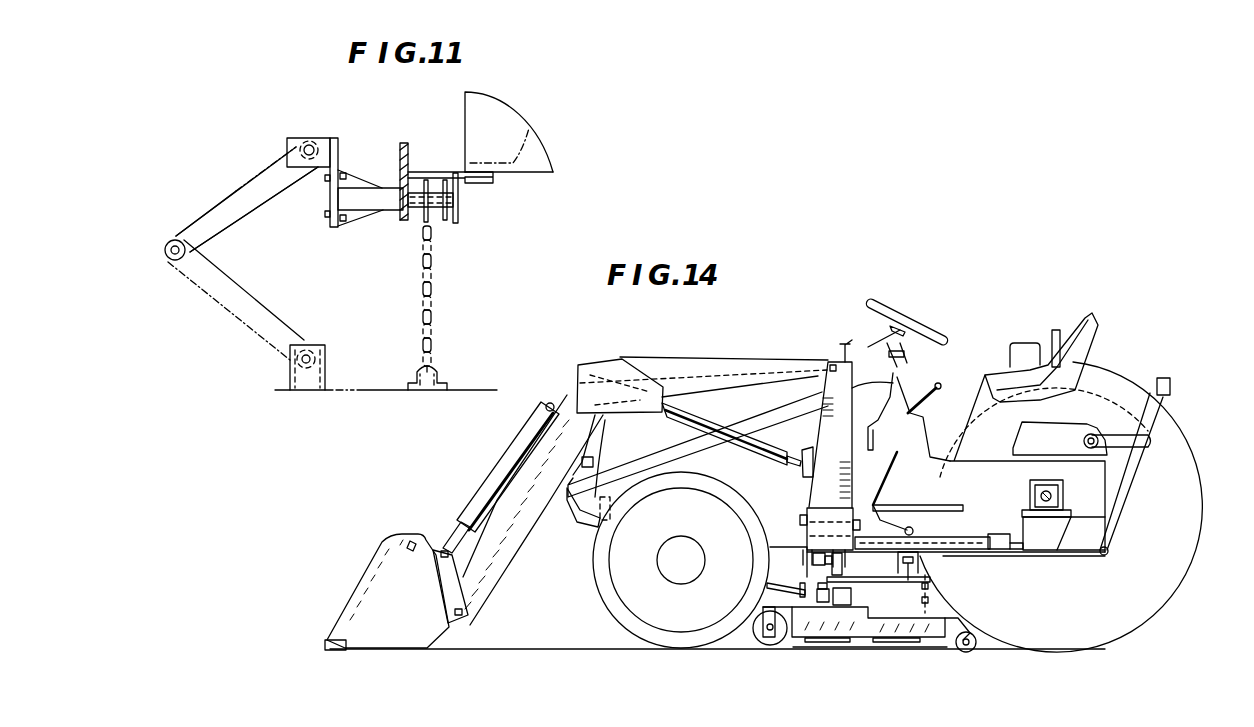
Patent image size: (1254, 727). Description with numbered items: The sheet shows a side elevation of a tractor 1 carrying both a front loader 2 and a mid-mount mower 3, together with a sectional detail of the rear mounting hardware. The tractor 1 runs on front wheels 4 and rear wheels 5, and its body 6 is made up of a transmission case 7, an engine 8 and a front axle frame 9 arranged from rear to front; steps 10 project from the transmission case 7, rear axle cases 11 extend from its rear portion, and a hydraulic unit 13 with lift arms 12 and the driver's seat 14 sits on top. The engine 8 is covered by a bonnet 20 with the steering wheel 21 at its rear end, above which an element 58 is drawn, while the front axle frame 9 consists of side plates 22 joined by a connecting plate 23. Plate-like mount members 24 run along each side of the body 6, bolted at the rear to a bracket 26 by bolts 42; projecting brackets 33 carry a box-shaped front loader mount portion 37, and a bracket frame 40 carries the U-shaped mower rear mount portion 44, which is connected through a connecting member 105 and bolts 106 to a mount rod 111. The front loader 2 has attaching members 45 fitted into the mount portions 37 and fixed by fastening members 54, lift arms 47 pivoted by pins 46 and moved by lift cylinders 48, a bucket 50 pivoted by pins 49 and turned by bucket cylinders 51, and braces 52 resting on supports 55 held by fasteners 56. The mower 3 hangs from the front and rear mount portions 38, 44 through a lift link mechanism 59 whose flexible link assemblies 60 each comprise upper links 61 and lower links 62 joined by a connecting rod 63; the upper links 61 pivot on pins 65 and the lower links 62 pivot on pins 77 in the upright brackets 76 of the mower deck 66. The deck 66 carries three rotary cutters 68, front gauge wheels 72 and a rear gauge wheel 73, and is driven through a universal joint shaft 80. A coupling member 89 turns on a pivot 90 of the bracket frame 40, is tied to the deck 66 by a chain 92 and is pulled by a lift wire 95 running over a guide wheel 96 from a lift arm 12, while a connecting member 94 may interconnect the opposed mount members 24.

In FIG. 14, the tractor 1 is at (966, 373).
In FIG. 14, the front loader 2 is at (555, 386).
In FIG. 14, the mower 3 is at (948, 648).
In FIG. 14, the front wheels 4 is at (604, 592).
In FIG. 14, the rear wheels 5 is at (1178, 587).
In FIG. 11, the tractor body 6 is at (480, 118).
In FIG. 14, the tractor body 6 is at (1083, 562).
In FIG. 11, the transmission case 7 is at (515, 106).
In FIG. 14, the transmission case 7 is at (1095, 516).
In FIG. 14, the engine 8 is at (782, 543).
In FIG. 14, the front axle frame 9 is at (632, 534).
In FIG. 14, the steps 10 is at (942, 530).
In FIG. 14, the rear axle cases 11 is at (1062, 482).
In FIG. 14, the lift arms 12 is at (1150, 408).
In FIG. 14, the hydraulic unit 13 is at (1110, 378).
In FIG. 14, the driver's seat 14 is at (1088, 338).
In FIG. 14, the bonnet 20 is at (793, 376).
In FIG. 14, the steering wheel 21 is at (924, 318).
In FIG. 14, the side plates 22 is at (597, 546).
In FIG. 14, the connecting plate 23 is at (586, 512).
In FIG. 11, the mount members 24 is at (402, 224).
In FIG. 14, the mount members 24 is at (975, 534).
In FIG. 14, the bracket 26 is at (1052, 548).
In FIG. 14, the projecting brackets 33 is at (800, 520).
In FIG. 14, the front loader mount portion 37 is at (840, 508).
In FIG. 14, the mower front mount portion 38 is at (840, 567).
In FIG. 11, the bracket frame 40 is at (458, 203).
In FIG. 14, the bolts 42 is at (999, 550).
In FIG. 11, the mower rear mount portion 44 is at (318, 138).
In FIG. 14, the mower rear mount portion 44 is at (925, 562).
In FIG. 14, the attaching members 45 is at (880, 390).
In FIG. 14, the pins 46 is at (834, 363).
In FIG. 14, the lift arms 47 is at (722, 358).
In FIG. 14, the lift cylinders 48 is at (702, 424).
In FIG. 14, the pins 49 is at (466, 627).
In FIG. 14, the bucket 50 is at (376, 563).
In FIG. 14, the bucket cylinders 51 is at (478, 500).
In FIG. 14, the braces 52 is at (650, 468).
In FIG. 14, the fastening members 54 is at (881, 490).
In FIG. 14, the supports 55 is at (598, 464).
In FIG. 14, the fasteners 56 is at (604, 446).
In FIG. 14, the steering wheel 58 is at (902, 310).
In FIG. 14, the lift link mechanism 59 is at (969, 604).
In FIG. 11, the flexible link assemblies 60 is at (153, 256).
In FIG. 11, the upper links 61 is at (250, 180).
In FIG. 11, the lower links 62 is at (237, 318).
In FIG. 11, the connecting rod 63 is at (165, 238).
In FIG. 11, the pins 65 is at (311, 145).
In FIG. 11, the mower deck 66 is at (462, 388).
In FIG. 14, the mower deck 66 is at (870, 632).
In FIG. 14, the rotary cutters 68 is at (914, 645).
In FIG. 14, the front cutting height adjusting gauge wheels 72 is at (786, 632).
In FIG. 14, the rear cutting height adjusting gauge wheel 73 is at (976, 646).
In FIG. 11, the upright brackets 76 is at (328, 352).
In FIG. 11, the pins 77 is at (310, 343).
In FIG. 14, the universal joint shaft 80 is at (772, 612).
In FIG. 11, the coupling member 89 is at (431, 233).
In FIG. 11, the pivot 90 is at (437, 182).
In FIG. 11, the chain 92 is at (438, 297).
In FIG. 11, the connecting members 94 is at (518, 160).
In FIG. 14, the lift wire 95 is at (1140, 487).
In FIG. 14, the guide wheel 96 is at (1104, 556).
In FIG. 11, the connecting member 105 is at (328, 200).
In FIG. 11, the bolts 106 is at (358, 178).
In FIG. 11, the mount rod 111 is at (362, 212).